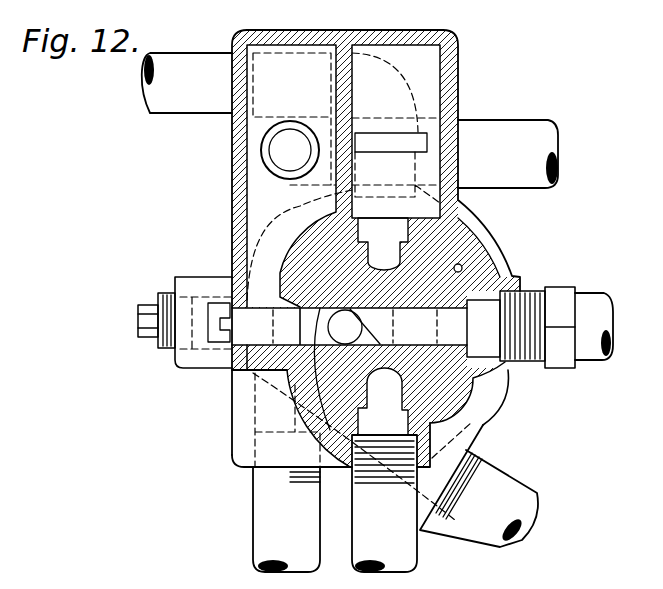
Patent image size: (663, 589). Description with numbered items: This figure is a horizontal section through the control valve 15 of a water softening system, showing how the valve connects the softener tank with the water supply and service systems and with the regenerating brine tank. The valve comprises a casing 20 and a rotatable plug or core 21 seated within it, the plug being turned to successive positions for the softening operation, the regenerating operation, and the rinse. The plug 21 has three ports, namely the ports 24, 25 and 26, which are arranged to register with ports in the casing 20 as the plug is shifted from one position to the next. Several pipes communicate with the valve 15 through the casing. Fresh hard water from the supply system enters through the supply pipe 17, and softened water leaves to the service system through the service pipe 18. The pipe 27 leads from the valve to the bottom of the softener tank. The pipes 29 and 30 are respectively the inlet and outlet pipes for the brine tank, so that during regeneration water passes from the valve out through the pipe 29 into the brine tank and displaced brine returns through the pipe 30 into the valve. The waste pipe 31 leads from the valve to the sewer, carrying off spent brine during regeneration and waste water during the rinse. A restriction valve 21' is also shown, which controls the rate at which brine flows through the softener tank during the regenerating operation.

The control valve 15 is at (345, 394).
The supply pipe 17 is at (587, 357).
The service pipe 18 is at (495, 480).
The casing 20 is at (523, 280).
The rotatable plug 21 is at (374, 283).
The restriction valve 21' is at (185, 339).
The port 24 is at (300, 300).
The port 25 is at (478, 384).
The port 26 is at (305, 373).
The pipe 27 is at (277, 176).
The brine tank inlet pipe 29 is at (267, 502).
The brine tank outlet pipe 30 is at (405, 538).
The waste pipe 31 is at (185, 107).